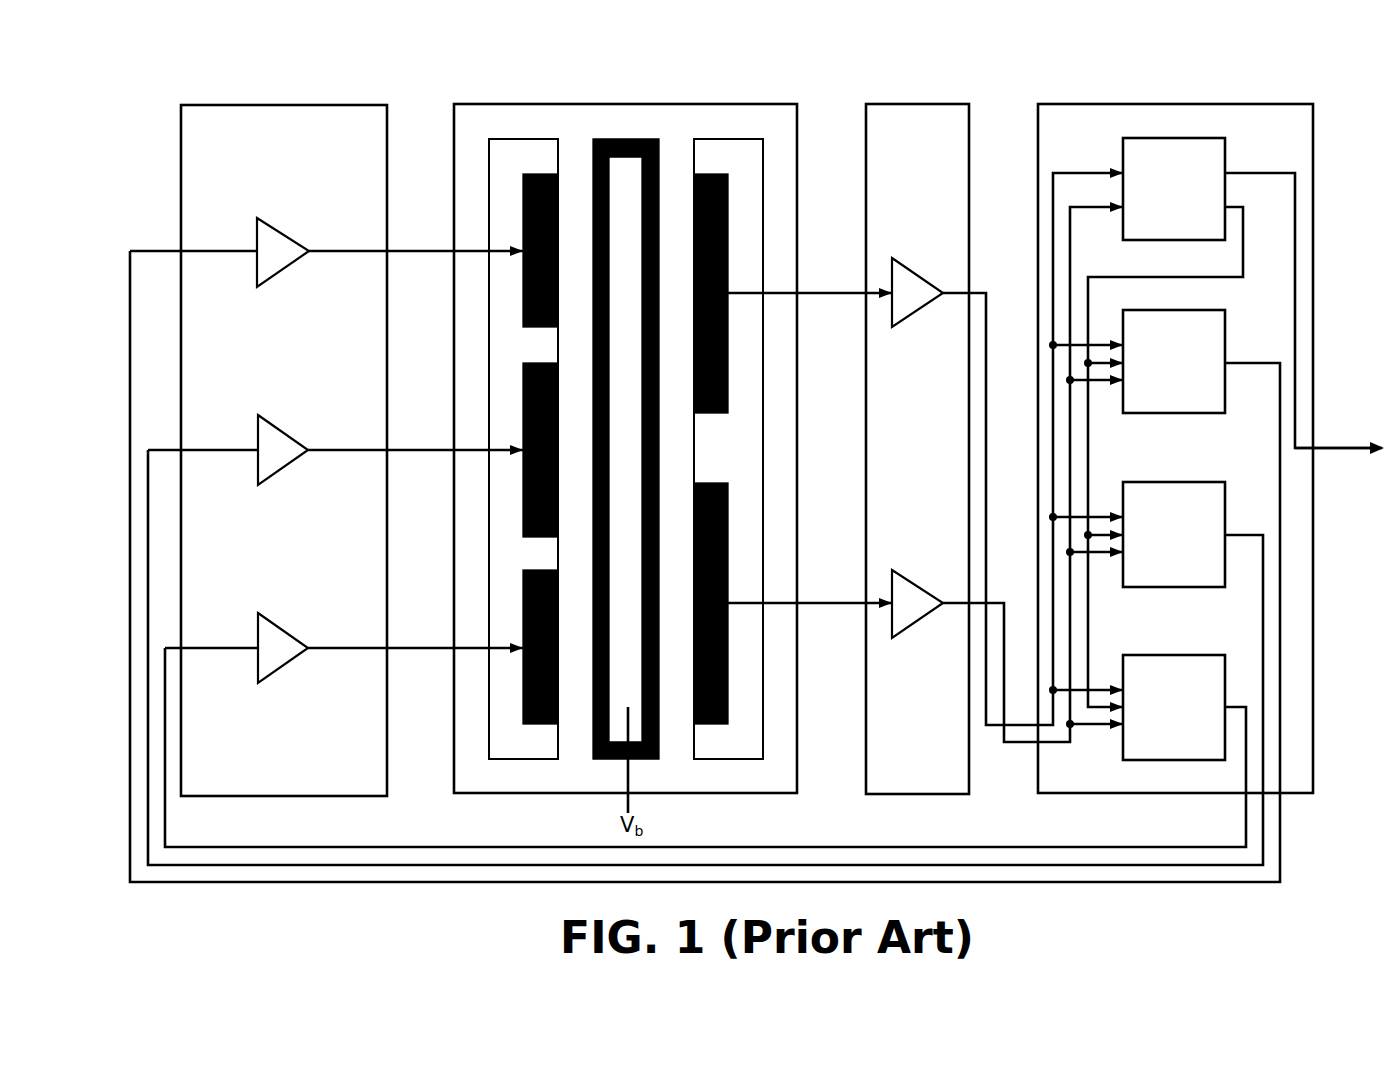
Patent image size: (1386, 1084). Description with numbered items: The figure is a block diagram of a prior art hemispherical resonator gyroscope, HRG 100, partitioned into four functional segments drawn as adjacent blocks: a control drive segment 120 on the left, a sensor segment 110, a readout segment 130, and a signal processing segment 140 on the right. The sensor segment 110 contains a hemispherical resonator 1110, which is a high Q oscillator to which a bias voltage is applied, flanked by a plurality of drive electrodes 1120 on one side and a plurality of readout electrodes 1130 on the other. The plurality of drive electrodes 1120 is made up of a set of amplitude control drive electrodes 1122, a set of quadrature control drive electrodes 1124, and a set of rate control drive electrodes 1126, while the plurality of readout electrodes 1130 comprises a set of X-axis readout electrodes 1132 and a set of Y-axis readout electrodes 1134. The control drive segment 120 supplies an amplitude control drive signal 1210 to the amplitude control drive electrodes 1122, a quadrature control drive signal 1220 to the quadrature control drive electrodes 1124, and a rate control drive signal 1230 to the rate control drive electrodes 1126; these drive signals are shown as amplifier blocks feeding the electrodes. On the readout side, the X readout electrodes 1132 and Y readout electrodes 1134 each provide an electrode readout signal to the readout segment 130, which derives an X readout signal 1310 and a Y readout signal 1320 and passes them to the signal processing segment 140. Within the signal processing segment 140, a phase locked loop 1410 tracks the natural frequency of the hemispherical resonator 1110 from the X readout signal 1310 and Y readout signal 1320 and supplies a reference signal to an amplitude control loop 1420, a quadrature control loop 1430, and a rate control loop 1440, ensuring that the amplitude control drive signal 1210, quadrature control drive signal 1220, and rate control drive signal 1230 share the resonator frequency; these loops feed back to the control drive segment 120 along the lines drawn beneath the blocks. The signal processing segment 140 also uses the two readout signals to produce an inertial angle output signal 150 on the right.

The HRG 100 is at (180, 85).
The control drive segment 120 is at (313, 104).
The amplitude control drive signal 1210 is at (275, 247).
The quadrature control drive signal 1220 is at (275, 450).
The rate control drive signal 1230 is at (277, 655).
The sensor segment 110 is at (587, 104).
The plurality of drive electrodes 1120 is at (505, 743).
The set of amplitude control drive electrodes 1122 is at (527, 173).
The set of quadrature control drive electrodes 1124 is at (523, 435).
The set of rate control drive electrodes 1126 is at (547, 724).
The hemispherical resonator 1110 is at (627, 173).
The plurality of readout electrodes 1130 is at (752, 743).
The set of X-axis readout electrodes 1132 is at (720, 173).
The set of Y-axis readout electrodes 1134 is at (713, 724).
The readout segment 130 is at (895, 104).
The X readout signal 1310 is at (917, 285).
The Y readout signal 1320 is at (919, 610).
The signal processing segment 140 is at (1118, 104).
The phase locked loop 1410 is at (1174, 189).
The amplitude control loop 1420 is at (1174, 361).
The quadrature control loop 1430 is at (1174, 534).
The rate control loop 1440 is at (1174, 707).
The inertial angle output signal 150 is at (1332, 435).